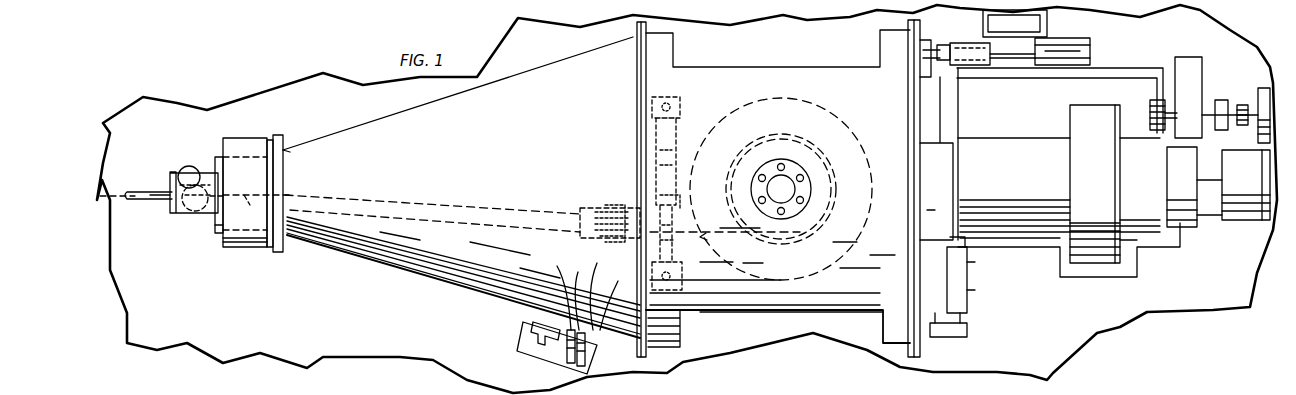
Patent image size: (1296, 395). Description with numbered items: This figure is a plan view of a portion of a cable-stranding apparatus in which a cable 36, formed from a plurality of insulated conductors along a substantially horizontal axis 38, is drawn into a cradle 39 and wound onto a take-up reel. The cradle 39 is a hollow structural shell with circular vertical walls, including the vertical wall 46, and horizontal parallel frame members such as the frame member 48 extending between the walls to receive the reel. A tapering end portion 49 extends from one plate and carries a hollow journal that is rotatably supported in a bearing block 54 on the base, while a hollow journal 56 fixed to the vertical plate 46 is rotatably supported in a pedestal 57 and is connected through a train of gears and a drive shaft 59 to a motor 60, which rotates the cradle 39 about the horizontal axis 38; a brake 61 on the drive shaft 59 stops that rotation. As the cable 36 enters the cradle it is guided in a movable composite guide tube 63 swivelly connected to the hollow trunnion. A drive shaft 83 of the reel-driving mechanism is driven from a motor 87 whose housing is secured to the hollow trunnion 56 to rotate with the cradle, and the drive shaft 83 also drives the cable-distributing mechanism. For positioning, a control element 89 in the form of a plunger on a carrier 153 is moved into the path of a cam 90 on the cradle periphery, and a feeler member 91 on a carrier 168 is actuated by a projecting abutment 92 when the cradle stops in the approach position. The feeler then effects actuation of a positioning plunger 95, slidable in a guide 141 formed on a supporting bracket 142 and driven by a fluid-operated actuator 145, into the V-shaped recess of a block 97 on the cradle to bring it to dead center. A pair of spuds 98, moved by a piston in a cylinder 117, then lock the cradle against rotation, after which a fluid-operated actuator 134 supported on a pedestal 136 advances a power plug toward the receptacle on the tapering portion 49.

The cable 36 is at (150, 203).
The horizontal axis 38 is at (108, 197).
The cradle 39 is at (528, 65).
The vertical wall 46 is at (933, 353).
The frame member 48 is at (773, 208).
The tapering end portion 49 is at (378, 121).
The bearing block 54 is at (243, 140).
The hollow journal 56 is at (960, 184).
The pedestal 57 is at (1023, 217).
The drive shaft 59 is at (1233, 93).
The motor 60 is at (1267, 87).
The brake 61 is at (1182, 57).
The composite guide tube 63 is at (422, 194).
The drive shaft 83 is at (791, 353).
The motor 87 is at (1250, 213).
The control element 89 is at (549, 290).
The cam 90 is at (580, 293).
The feeler member 91 is at (616, 298).
The projecting abutment 92 is at (600, 289).
The positioning plunger 95 is at (945, 63).
The block 97 is at (927, 78).
The spuds 98 is at (947, 318).
The cylinder 117 is at (973, 295).
The fluid-operated actuator 134 is at (533, 344).
The pedestal 136 is at (563, 361).
The guide 141 is at (978, 62).
The supporting bracket 142 is at (985, 22).
The fluid-operated actuator 145 is at (1075, 36).
The carrier 153 is at (580, 341).
The carrier 168 is at (593, 347).